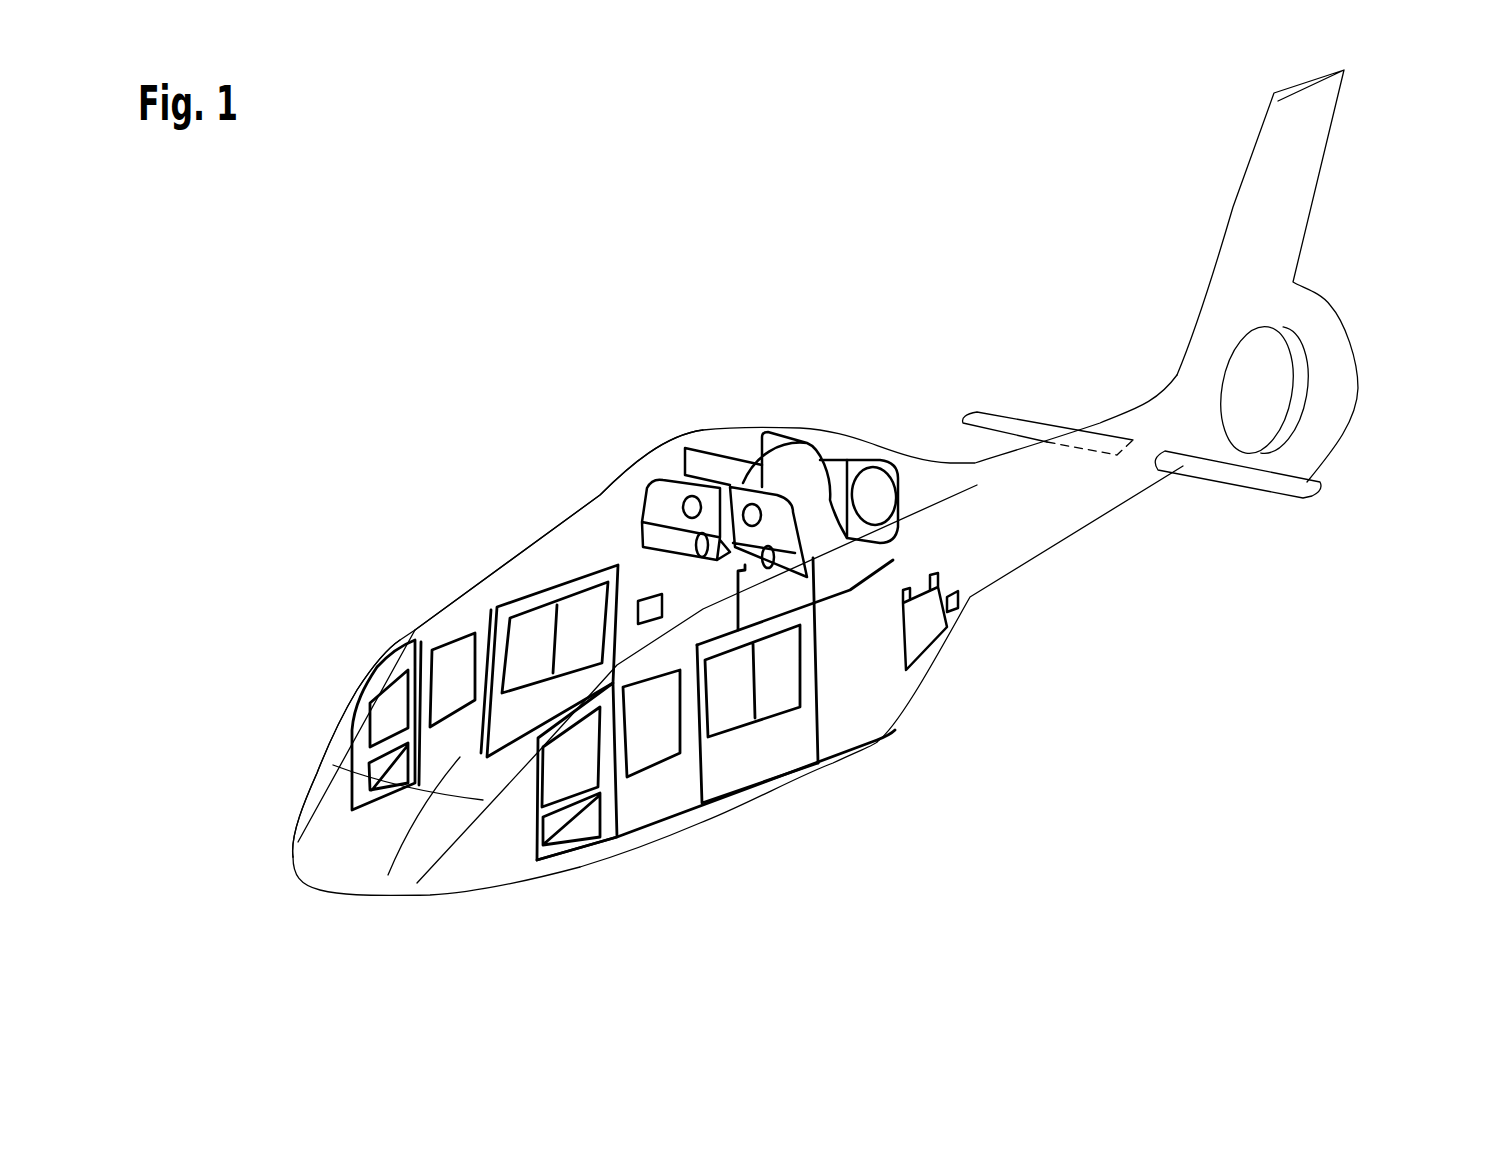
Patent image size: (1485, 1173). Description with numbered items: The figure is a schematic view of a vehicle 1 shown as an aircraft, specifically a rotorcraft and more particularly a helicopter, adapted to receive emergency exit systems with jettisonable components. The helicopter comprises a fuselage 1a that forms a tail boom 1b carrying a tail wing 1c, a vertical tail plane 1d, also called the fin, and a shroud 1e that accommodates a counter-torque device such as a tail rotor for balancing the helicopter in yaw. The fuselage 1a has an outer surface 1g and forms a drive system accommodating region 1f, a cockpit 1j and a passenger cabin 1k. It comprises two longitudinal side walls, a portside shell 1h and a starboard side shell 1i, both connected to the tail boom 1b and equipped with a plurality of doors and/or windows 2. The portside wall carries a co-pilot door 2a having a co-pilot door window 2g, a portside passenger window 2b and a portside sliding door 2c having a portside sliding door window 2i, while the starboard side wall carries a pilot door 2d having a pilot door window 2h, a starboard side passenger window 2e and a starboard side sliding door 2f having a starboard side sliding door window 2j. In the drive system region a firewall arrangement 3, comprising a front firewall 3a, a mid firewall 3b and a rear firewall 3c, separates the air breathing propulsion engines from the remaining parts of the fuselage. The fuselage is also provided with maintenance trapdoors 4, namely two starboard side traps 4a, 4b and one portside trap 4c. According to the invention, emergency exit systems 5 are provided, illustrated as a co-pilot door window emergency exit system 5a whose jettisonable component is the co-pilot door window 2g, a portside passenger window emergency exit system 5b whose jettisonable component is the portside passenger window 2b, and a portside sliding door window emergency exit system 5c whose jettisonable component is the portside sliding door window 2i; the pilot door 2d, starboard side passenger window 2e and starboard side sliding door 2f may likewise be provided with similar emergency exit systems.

The vehicle 1 is at (487, 380).
The fuselage 1a is at (345, 860).
The tail boom 1b is at (1050, 507).
The tail wing 1c is at (1010, 420).
The vertical tail plane 1d is at (1282, 219).
The shroud 1e is at (1300, 394).
The drive system accommodating region 1f is at (615, 496).
The outer surface 1g is at (440, 600).
The portside shell 1h is at (852, 722).
The starboard side shell 1i is at (330, 742).
The cockpit 1j is at (440, 737).
The passenger cabin 1k is at (466, 748).
The doors and/or windows 2 is at (525, 826).
The co-pilot door 2a is at (578, 820).
The portside passenger window 2b is at (650, 740).
The portside sliding door 2c is at (735, 773).
The pilot door 2d is at (363, 732).
The starboard side passenger window 2e is at (450, 678).
The starboard side sliding door 2f is at (505, 612).
The co-pilot door window 2g is at (562, 765).
The pilot door window 2h is at (390, 695).
The portside sliding door window 2i is at (765, 693).
The starboard side sliding door window 2j is at (547, 638).
The firewall arrangement 3 is at (739, 416).
The front firewall 3a is at (672, 487).
The mid firewall 3b is at (712, 463).
The rear firewall 3c is at (787, 441).
The maintenance trapdoors 4 is at (972, 607).
The starboard side trap 4a is at (645, 588).
The starboard side trap 4b is at (790, 593).
The portside trap 4c is at (922, 623).
The emergency exit systems 5 is at (835, 640).
The co-pilot door window emergency exit system 5a is at (588, 767).
The portside passenger window emergency exit system 5b is at (678, 753).
The portside sliding door window emergency exit system 5c is at (788, 683).